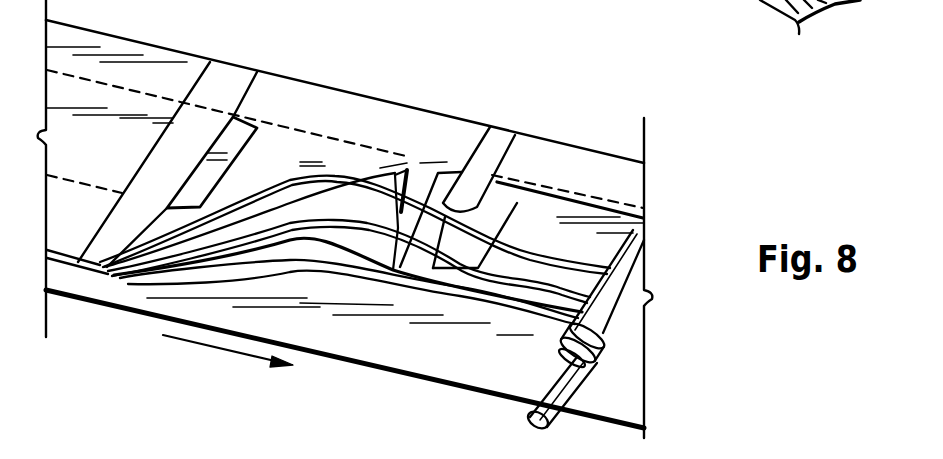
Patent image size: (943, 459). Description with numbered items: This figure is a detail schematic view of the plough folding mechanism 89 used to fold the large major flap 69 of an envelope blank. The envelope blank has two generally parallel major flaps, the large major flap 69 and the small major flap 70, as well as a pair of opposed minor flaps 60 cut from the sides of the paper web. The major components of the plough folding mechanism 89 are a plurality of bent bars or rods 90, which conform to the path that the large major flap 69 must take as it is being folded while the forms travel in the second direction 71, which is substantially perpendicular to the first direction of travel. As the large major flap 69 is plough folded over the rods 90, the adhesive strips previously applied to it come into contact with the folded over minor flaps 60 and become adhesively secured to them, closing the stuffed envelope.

The minor flap 60 is at (222, 148).
The large major flap 69 is at (367, 205).
The small major flap 70 is at (293, 88).
The second direction 71 is at (173, 335).
The plough folding mechanism 89 is at (462, 205).
The bent bars or rods 90 is at (423, 168).